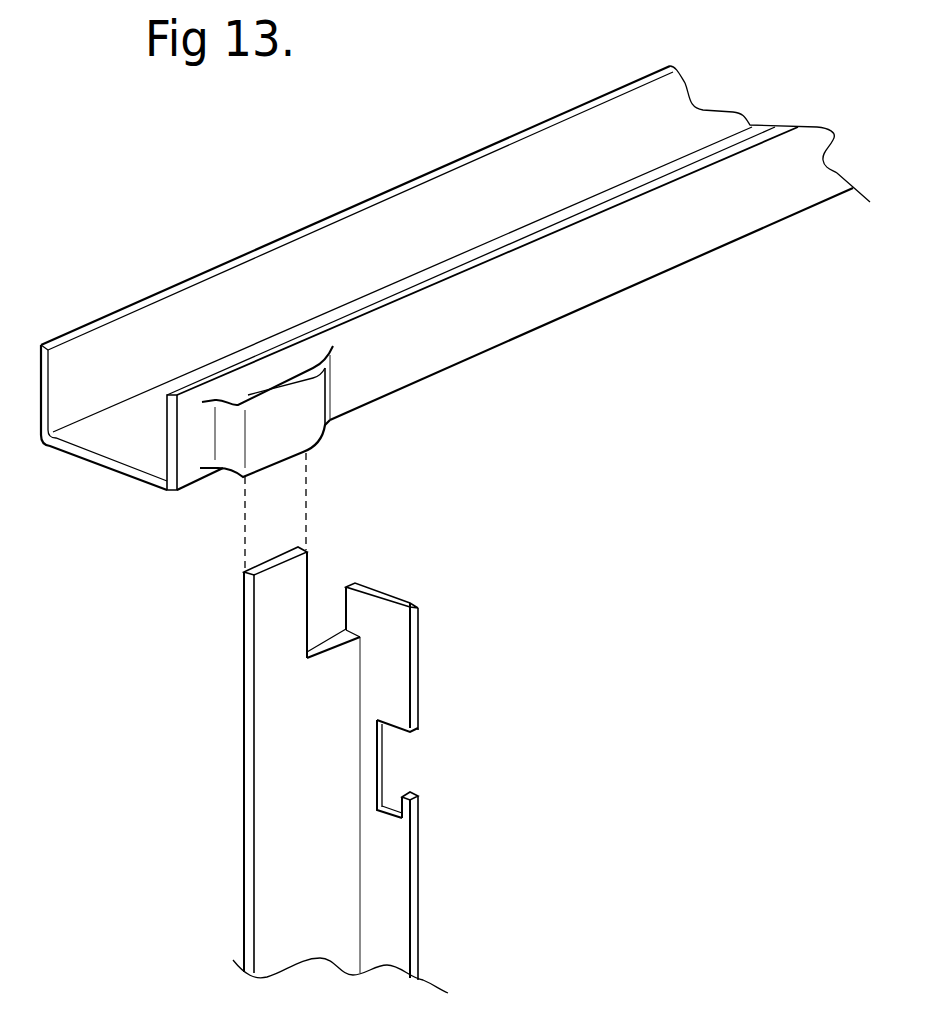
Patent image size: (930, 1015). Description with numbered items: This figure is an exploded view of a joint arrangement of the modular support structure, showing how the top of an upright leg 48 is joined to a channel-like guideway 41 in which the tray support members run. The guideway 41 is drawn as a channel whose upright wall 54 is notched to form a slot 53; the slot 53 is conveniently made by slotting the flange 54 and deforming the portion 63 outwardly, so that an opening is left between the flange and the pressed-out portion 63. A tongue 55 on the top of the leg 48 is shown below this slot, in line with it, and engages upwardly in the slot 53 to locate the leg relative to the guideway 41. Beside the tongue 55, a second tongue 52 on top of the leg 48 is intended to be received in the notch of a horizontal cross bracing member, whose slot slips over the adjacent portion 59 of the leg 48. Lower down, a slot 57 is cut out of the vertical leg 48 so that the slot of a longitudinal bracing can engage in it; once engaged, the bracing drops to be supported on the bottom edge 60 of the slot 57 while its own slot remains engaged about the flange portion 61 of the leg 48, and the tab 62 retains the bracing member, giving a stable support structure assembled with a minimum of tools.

The guideway 41 is at (575, 292).
The upright wall 54 is at (350, 398).
The slot 53 is at (272, 392).
The portion 63 is at (265, 437).
The tongue 55 is at (285, 572).
The tongue 52 is at (385, 615).
The portion 59 is at (333, 683).
The slot 57 is at (392, 757).
The flange portion 61 is at (363, 774).
The tab 62 is at (407, 808).
The bottom edge 60 is at (403, 820).
The upright leg 48 is at (382, 918).